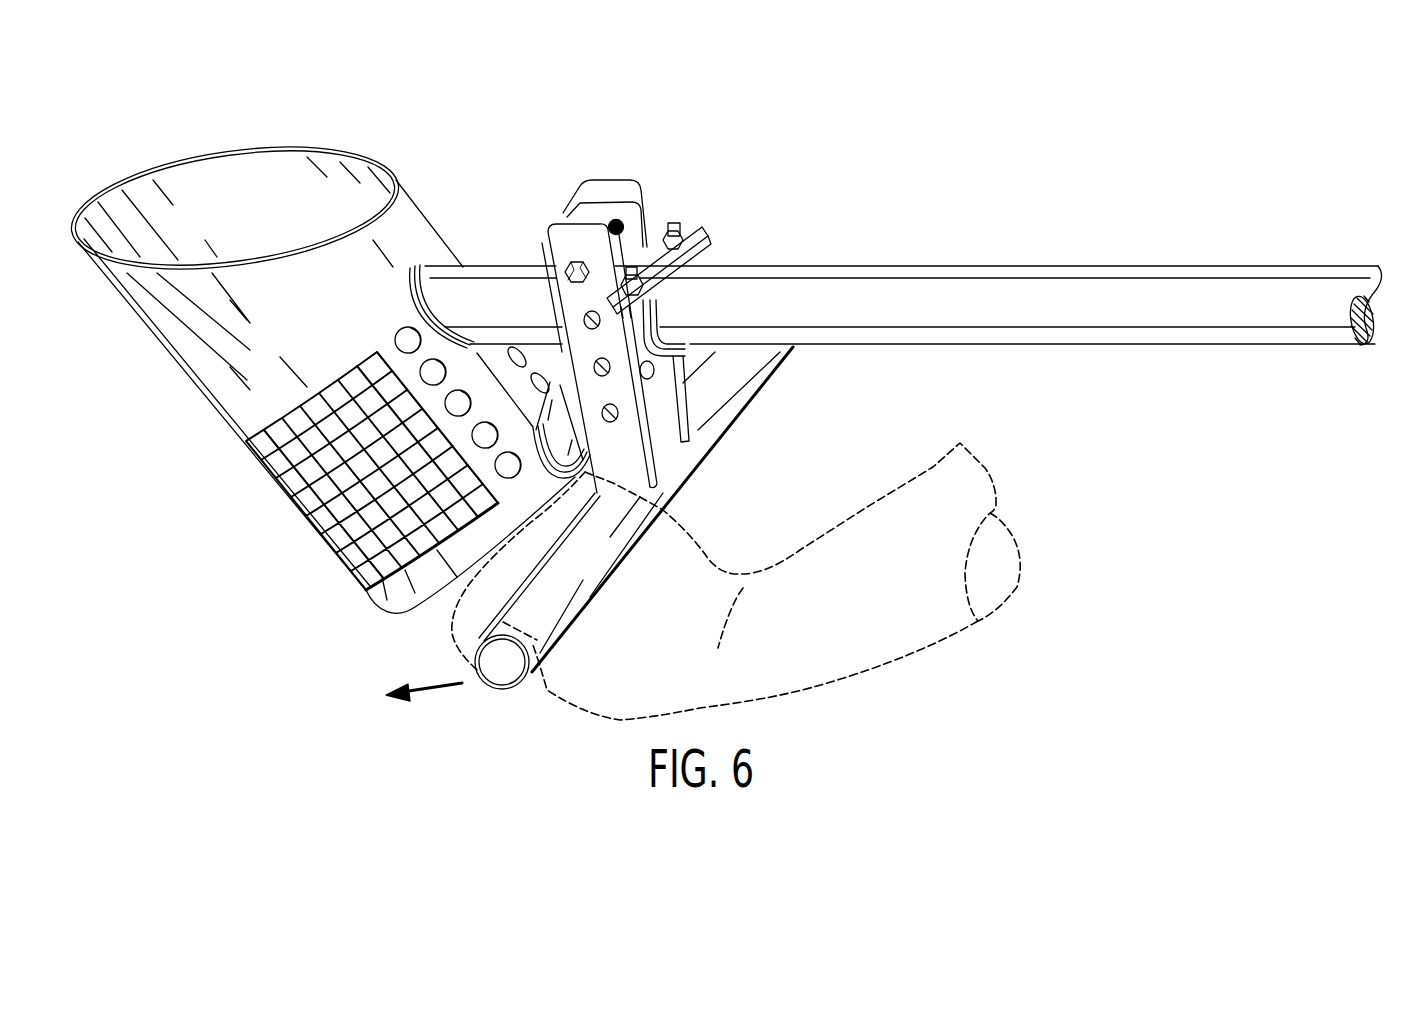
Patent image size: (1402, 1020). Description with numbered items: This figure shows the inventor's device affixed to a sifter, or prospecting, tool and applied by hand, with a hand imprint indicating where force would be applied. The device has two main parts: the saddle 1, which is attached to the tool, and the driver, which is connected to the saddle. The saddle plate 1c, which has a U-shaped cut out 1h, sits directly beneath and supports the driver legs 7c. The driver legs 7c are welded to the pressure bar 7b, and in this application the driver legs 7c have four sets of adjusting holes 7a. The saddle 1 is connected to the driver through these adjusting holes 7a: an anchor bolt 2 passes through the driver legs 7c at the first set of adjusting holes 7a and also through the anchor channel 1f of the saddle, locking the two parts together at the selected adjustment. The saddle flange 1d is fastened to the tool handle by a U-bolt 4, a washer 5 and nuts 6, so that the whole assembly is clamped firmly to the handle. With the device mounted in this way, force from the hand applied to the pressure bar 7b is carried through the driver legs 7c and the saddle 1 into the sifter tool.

The saddle 1 is at (648, 245).
The saddle plate 1c is at (563, 282).
The saddle flange 1d is at (727, 265).
The anchor channel 1f is at (608, 221).
The U-shaped cut out 1h is at (557, 317).
The anchor bolt 2 is at (574, 258).
The U-bolt 4 is at (688, 352).
The washer 5 is at (700, 232).
The nuts 6 is at (678, 228).
The adjusting holes 7a is at (650, 450).
The pressure bar 7b is at (650, 427).
The driver legs 7c is at (622, 180).